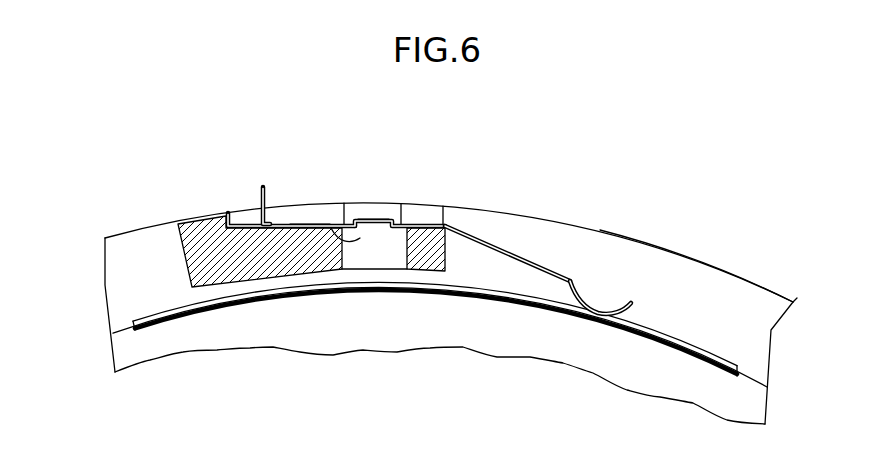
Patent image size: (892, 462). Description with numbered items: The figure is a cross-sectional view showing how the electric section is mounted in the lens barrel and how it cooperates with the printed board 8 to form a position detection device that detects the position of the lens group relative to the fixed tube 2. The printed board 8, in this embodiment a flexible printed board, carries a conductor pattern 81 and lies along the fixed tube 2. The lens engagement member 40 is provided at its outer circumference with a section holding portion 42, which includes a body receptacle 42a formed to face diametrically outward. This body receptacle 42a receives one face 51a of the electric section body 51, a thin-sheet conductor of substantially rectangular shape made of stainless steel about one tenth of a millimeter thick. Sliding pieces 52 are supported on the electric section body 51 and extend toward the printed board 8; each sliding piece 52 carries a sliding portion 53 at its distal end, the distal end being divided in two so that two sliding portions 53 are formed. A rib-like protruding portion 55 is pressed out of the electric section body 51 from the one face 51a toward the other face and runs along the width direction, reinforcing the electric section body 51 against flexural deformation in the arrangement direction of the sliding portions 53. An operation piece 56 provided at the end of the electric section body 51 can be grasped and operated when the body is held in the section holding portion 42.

The fixed tube 2 is at (275, 323).
The printed board 8 is at (383, 290).
The lens engagement member 40 is at (211, 220).
The section holding portion 42 is at (288, 211).
The body receptacle 42a is at (309, 220).
The electric section body 51 is at (320, 222).
The one face 51a is at (373, 220).
The sliding piece 52 is at (510, 258).
The sliding portion 53 is at (576, 312).
The rib-like protruding portion 55 is at (391, 218).
The operation piece 56 is at (262, 188).
The conductor pattern 81 is at (670, 328).